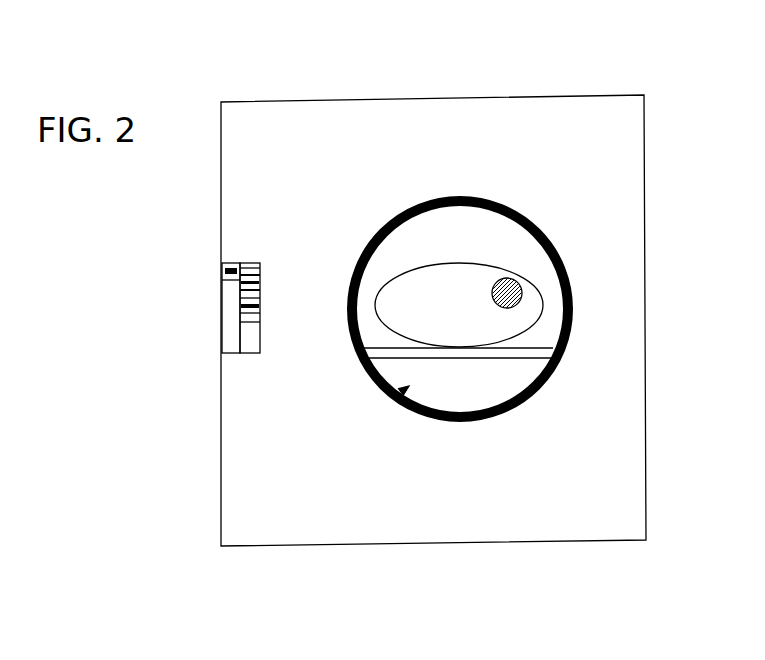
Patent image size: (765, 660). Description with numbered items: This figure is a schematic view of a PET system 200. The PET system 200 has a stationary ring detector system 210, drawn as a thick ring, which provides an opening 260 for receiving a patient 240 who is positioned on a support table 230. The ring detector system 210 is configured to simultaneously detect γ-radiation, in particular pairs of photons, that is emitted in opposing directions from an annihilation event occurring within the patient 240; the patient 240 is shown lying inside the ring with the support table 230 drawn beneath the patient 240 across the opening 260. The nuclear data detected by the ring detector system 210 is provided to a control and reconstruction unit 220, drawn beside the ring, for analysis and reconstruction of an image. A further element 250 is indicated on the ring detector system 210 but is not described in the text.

The PET system 200 is at (421, 34).
The stationary ring detector system 210 is at (518, 278).
The control and reconstruction unit 220 is at (212, 324).
The support table 230 is at (527, 358).
The patient 240 is at (397, 278).
The thick circular ring 250 is at (552, 238).
The opening 260 is at (395, 397).